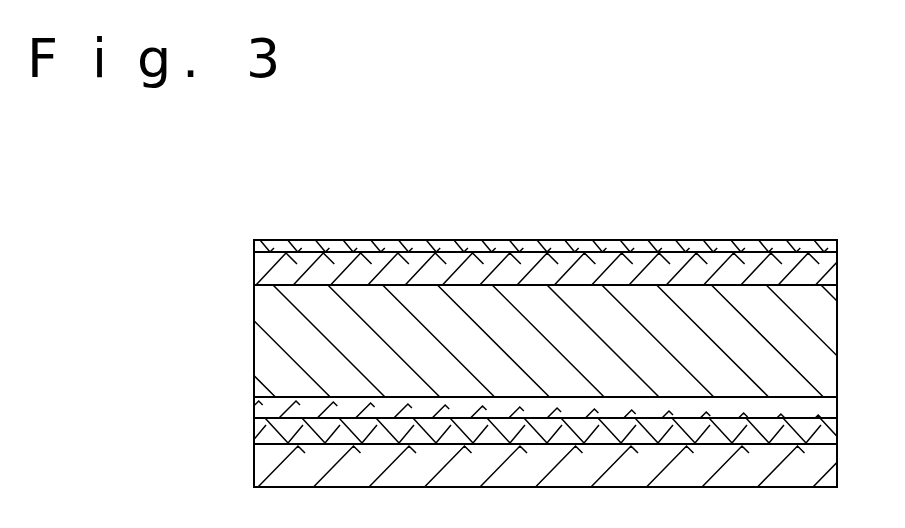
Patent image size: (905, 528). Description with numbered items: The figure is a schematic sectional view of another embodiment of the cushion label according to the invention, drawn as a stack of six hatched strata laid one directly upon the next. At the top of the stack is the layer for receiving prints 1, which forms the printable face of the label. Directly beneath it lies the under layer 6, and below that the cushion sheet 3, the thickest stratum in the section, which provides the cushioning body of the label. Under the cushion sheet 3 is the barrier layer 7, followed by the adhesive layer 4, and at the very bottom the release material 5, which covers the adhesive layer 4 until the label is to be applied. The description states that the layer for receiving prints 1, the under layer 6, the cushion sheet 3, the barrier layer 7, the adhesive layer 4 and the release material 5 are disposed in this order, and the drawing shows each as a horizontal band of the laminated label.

The layer for receiving prints 1 is at (815, 241).
The under layer 6 is at (815, 263).
The cushion sheet 3 is at (817, 340).
The barrier layer 7 is at (820, 405).
The adhesive layer 4 is at (818, 428).
The release material 5 is at (818, 463).